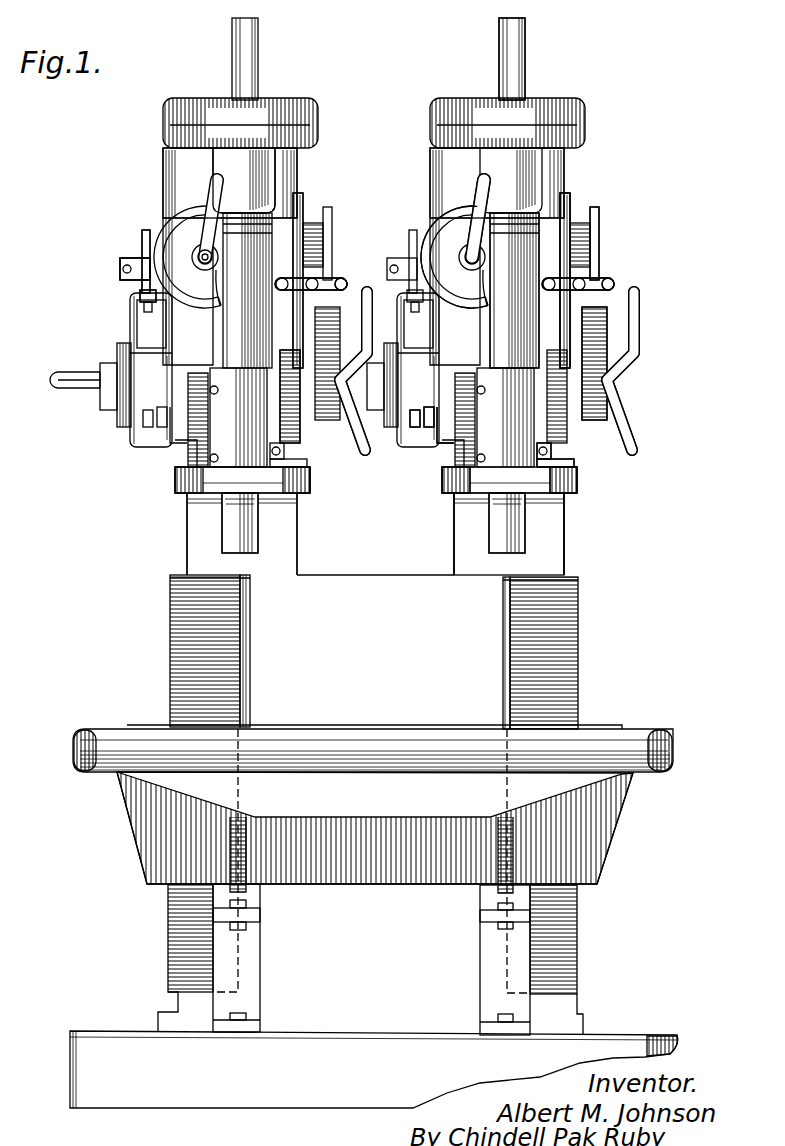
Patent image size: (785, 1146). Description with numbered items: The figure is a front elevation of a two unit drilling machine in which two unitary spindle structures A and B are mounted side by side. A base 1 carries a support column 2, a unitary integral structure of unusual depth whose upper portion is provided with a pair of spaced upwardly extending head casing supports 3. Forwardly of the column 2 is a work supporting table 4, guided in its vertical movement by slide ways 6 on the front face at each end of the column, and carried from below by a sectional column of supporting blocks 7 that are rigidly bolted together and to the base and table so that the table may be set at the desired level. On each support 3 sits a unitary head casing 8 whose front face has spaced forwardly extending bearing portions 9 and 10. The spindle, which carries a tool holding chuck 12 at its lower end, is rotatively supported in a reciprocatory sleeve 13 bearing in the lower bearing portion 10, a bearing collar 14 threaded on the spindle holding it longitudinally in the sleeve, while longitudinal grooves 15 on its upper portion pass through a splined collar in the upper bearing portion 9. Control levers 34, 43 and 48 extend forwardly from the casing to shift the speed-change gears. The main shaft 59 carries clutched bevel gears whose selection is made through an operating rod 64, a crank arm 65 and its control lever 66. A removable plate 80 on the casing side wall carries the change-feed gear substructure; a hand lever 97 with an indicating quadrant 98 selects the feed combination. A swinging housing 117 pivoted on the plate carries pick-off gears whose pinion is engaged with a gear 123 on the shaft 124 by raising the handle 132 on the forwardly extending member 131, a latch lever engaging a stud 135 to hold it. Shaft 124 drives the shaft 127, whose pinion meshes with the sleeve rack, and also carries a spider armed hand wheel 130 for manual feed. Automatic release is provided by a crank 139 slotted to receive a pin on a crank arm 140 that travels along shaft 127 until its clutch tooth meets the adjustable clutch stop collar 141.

The base 1 is at (262, 1080).
The support column 2 is at (488, 685).
The head casing supports 3 is at (187, 546).
The work supporting table 4 is at (388, 738).
The slide ways 6 is at (175, 650).
The supporting blocks 7 is at (257, 895).
The head casing 8 is at (183, 162).
The upper bearing portion 9 is at (290, 163).
The lower bearing portion 10 is at (222, 470).
The tool holding chuck 12 is at (495, 556).
The reciprocatory sleeve 13 is at (530, 240).
The bearing collar 14 is at (540, 220).
The longitudinal grooves 15 is at (522, 45).
The control lever 34 is at (318, 283).
The control lever 43 is at (341, 277).
The control lever 48 is at (300, 278).
The main shaft 59 is at (85, 388).
The operating rod 64 is at (140, 291).
The crank arm 65 is at (150, 250).
The control lever 66 is at (119, 275).
The plate 80 is at (592, 270).
The hand lever 97 is at (482, 181).
The indicating quadrant 98 is at (448, 214).
The swinging housing 117 is at (605, 322).
The gear 123 is at (295, 430).
The shaft 124 is at (310, 425).
The shaft 127 is at (422, 437).
The spider armed hand wheel 130 is at (633, 414).
The forwardly extending member 131 is at (567, 432).
The handle 132 is at (585, 442).
The stud 135 is at (562, 440).
The crank 139 is at (448, 472).
The crank arm 140 is at (440, 450).
The adjustable clutch stop collar 141 is at (428, 413).
The unitary spindle structure A is at (626, 233).
The unitary spindle structure B is at (115, 248).